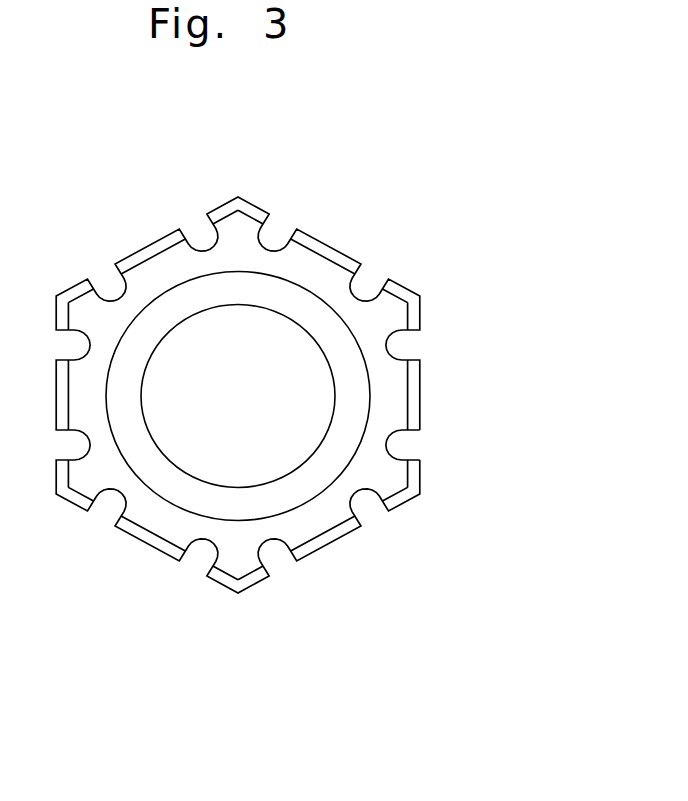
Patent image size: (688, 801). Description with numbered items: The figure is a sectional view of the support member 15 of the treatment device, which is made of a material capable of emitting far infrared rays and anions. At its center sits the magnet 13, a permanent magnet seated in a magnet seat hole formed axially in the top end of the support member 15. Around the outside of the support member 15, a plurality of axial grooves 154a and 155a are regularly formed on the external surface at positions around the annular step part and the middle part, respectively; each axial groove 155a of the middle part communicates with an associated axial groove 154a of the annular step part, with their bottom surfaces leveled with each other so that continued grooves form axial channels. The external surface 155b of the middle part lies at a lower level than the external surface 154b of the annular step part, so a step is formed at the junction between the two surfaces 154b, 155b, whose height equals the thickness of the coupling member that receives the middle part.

The magnet 13 is at (257, 335).
The support member 15 is at (126, 240).
The axial groove of annular step part 154a is at (493, 449).
The axial groove of middle part 155a is at (395, 446).
The external surface of annular step part 154b is at (505, 395).
The external surface of middle part 155b is at (414, 388).